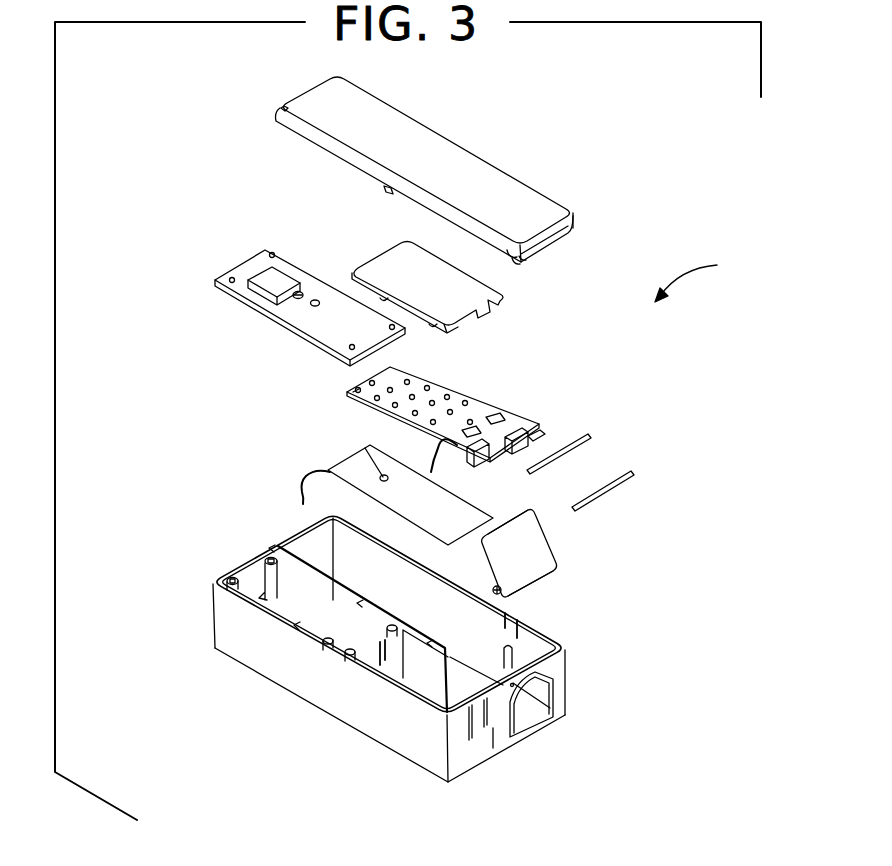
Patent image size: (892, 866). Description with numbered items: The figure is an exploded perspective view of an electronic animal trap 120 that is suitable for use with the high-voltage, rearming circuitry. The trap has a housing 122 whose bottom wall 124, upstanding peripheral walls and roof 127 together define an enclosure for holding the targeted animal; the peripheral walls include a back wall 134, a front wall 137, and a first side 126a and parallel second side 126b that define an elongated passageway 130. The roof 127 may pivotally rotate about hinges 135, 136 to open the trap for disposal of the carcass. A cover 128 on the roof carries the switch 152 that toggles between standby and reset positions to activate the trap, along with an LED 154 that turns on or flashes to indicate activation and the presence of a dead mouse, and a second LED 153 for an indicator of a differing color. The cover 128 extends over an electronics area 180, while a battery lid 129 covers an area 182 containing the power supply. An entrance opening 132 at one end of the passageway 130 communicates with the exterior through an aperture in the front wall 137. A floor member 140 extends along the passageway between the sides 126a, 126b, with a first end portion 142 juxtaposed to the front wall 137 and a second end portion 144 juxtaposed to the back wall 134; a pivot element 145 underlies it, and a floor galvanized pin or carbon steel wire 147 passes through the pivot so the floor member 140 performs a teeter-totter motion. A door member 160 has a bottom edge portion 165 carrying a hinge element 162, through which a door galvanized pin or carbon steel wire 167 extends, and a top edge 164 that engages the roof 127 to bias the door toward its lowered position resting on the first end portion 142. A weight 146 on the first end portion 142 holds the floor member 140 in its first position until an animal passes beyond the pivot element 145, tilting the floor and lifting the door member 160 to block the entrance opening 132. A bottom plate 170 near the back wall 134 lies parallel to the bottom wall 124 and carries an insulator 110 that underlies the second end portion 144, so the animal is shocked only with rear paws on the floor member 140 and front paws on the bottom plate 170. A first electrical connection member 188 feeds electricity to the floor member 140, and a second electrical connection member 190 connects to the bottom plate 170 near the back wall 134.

The insulator 110 is at (366, 447).
The electronic animal trap 120 is at (713, 276).
The housing 122 is at (368, 669).
The bottom wall 124 is at (333, 717).
The first side 126a is at (283, 668).
The second side 126b is at (467, 580).
The roof 127 is at (445, 134).
The cover 128 is at (242, 272).
The battery lid 129 is at (510, 302).
The elongated passageway 130 is at (406, 615).
The entrance opening 132 is at (537, 720).
The back wall 134 is at (302, 530).
The hinge 135 is at (278, 112).
The hinge 136 is at (516, 258).
The front wall 137 is at (493, 732).
The floor member 140 is at (432, 385).
The first end portion 142 is at (520, 425).
The second end portion 144 is at (358, 382).
The pivot element 145 is at (458, 452).
The weight 146 is at (546, 437).
The floor galvanized pin or carbon steel wire 147 is at (590, 447).
The switch 152 is at (283, 272).
The second LED 153 is at (317, 300).
The LED 154 is at (296, 297).
The door member 160 is at (535, 552).
The hinge element 162 is at (505, 596).
The top edge 164 is at (520, 507).
The bottom edge portion 165 is at (532, 587).
The door galvanized pin or carbon steel wire 167 is at (617, 487).
The bottom plate 170 is at (397, 510).
The electronics area 180 is at (287, 592).
The area 182 is at (410, 684).
The first electrical connection member 188 is at (428, 447).
The second electrical connection member 190 is at (300, 476).